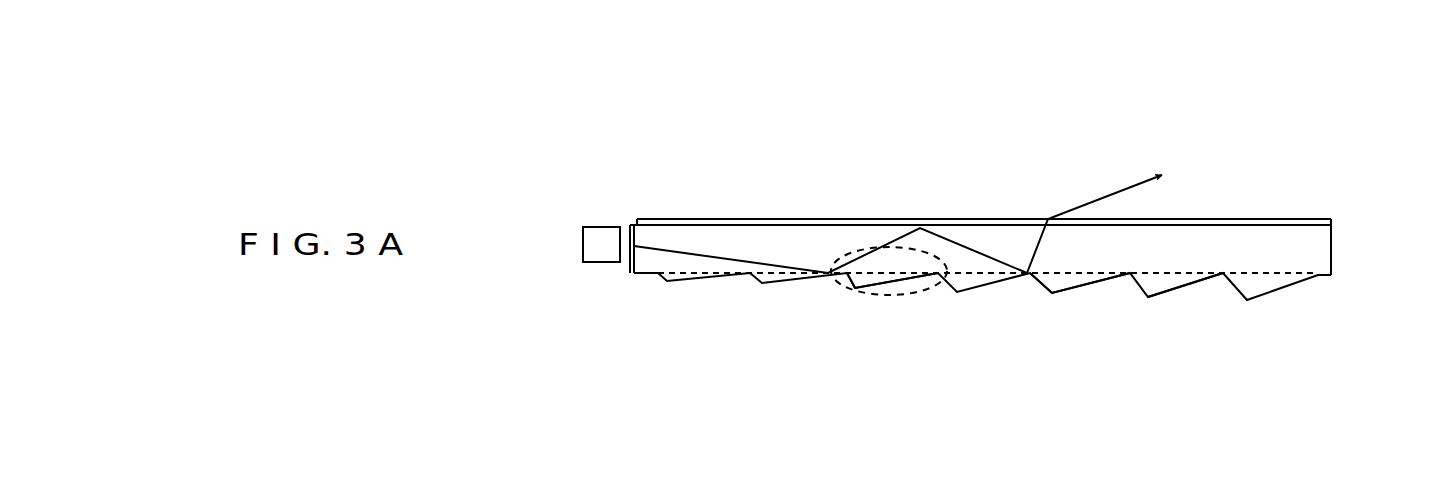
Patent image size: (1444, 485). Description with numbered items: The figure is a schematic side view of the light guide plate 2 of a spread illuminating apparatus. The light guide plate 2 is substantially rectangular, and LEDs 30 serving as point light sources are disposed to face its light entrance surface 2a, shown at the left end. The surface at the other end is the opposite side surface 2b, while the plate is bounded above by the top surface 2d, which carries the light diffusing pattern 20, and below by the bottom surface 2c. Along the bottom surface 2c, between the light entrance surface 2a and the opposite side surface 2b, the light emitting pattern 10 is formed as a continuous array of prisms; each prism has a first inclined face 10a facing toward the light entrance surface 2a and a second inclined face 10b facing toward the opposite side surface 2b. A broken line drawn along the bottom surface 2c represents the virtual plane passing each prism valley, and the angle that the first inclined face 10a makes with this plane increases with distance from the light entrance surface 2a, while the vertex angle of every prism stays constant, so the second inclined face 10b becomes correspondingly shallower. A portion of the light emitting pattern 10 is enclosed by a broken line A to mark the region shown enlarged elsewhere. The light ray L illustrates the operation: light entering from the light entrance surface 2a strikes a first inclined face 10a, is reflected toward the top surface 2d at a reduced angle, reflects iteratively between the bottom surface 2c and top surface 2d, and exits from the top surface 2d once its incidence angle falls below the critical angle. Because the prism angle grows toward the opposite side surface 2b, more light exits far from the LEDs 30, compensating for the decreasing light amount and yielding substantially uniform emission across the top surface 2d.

The light guide plate 2 is at (1143, 98).
The light entrance surface 2a is at (633, 274).
The opposite side surface 2b is at (1331, 243).
The bottom surface 2c is at (1194, 282).
The top surface 2d is at (715, 226).
The light emitting pattern 10 is at (1083, 292).
The first inclined face 10a is at (889, 283).
The second inclined face 10b is at (847, 277).
The light diffusing pattern 20 is at (820, 208).
The LEDs 30 is at (605, 235).
The broken line A is at (878, 295).
The light ray L is at (915, 211).